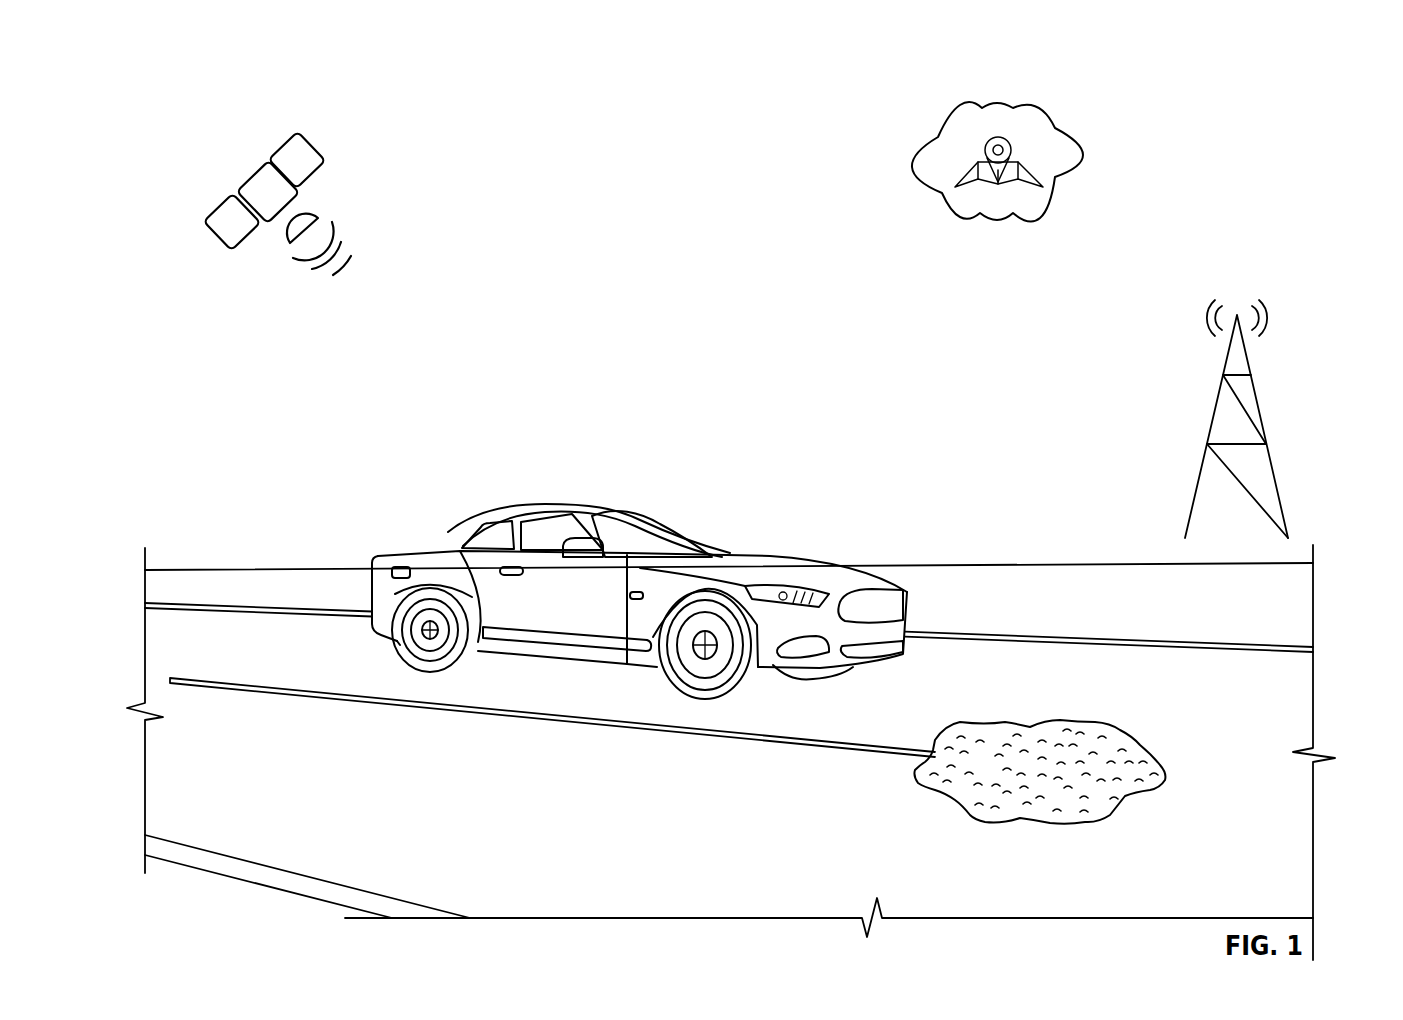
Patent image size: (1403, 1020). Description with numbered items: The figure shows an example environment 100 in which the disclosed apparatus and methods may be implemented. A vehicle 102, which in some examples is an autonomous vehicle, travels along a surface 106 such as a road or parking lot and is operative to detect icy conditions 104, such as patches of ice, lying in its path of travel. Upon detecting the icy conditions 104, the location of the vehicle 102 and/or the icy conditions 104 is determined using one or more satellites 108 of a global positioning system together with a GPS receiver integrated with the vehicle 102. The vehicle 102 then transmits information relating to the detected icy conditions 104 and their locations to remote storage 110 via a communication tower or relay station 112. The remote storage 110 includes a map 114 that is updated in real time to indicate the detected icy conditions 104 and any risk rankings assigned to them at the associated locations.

The example environment 100 is at (226, 74).
The vehicle 102 is at (443, 519).
The icy conditions 104 is at (1130, 763).
The surface 106 is at (1282, 627).
The satellites 108 is at (254, 279).
The remote storage 110 is at (900, 175).
The communication tower or relay station 112 is at (1277, 478).
The map 114 is at (1023, 170).